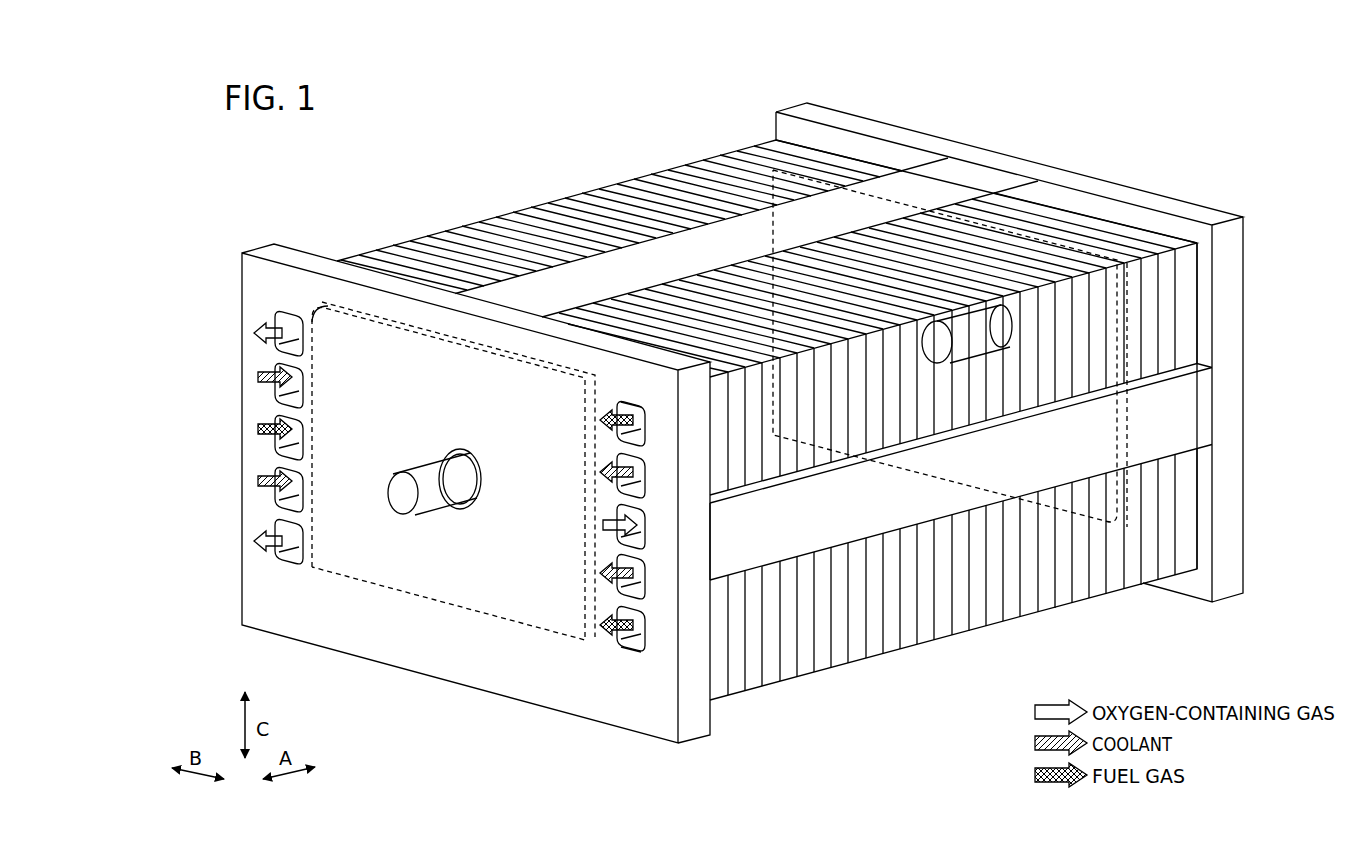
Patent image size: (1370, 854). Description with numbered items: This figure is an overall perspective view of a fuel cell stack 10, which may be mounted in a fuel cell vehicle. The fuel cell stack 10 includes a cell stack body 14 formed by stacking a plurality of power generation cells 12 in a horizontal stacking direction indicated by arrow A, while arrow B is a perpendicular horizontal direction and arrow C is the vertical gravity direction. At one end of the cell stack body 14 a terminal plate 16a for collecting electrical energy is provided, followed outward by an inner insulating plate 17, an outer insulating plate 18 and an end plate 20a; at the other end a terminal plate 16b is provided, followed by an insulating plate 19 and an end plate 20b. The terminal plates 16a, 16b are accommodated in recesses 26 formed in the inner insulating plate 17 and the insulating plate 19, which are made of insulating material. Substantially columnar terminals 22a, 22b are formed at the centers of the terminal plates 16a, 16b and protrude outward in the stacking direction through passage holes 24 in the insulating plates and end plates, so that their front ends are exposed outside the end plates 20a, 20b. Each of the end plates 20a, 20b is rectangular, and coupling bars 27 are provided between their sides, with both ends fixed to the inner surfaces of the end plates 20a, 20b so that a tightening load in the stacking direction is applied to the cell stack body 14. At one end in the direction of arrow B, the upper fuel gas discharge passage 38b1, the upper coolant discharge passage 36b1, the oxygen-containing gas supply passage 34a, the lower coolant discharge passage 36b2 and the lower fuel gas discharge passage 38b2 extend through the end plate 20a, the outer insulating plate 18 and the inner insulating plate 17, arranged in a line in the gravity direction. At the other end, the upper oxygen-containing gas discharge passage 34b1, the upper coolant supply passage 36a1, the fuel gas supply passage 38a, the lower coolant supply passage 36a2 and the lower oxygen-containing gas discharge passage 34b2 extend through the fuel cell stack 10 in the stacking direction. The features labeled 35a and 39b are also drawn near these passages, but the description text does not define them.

The fuel cell stack 10 is at (333, 143).
The power generation cell 12 is at (484, 216).
The cell stack body 14 is at (565, 153).
The terminal plate 16a is at (518, 624).
The terminal plate 16b is at (1127, 337).
The inner insulating plate 17 is at (743, 690).
The outer insulating plate 18 is at (716, 704).
The insulating plate 19 is at (1182, 545).
The end plate 20a is at (432, 662).
The end plate 20b is at (1232, 258).
The terminal 22a is at (404, 516).
The terminal 22b is at (1008, 325).
The passage hole 24 is at (462, 509).
The recess 26 is at (320, 305).
The coupling bar 27 is at (985, 180).
The oxygen-containing gas supply passage 34a is at (605, 524).
The upper oxygen-containing gas discharge passage 34b1 is at (305, 334).
The lower oxygen-containing gas discharge passage 34b2 is at (284, 561).
The oxygen-containing gas supply port 35a is at (652, 524).
The upper coolant supply passage 36a1 is at (305, 383).
The lower coolant supply passage 36a2 is at (306, 493).
The upper coolant discharge passage 36b1 is at (612, 470).
The lower coolant discharge passage 36b2 is at (612, 570).
The fuel gas supply passage 38a is at (305, 431).
The upper fuel gas discharge passage 38b1 is at (612, 420).
The lower fuel gas discharge passage 38b2 is at (612, 620).
The fuel gas discharge port 39b is at (630, 404).